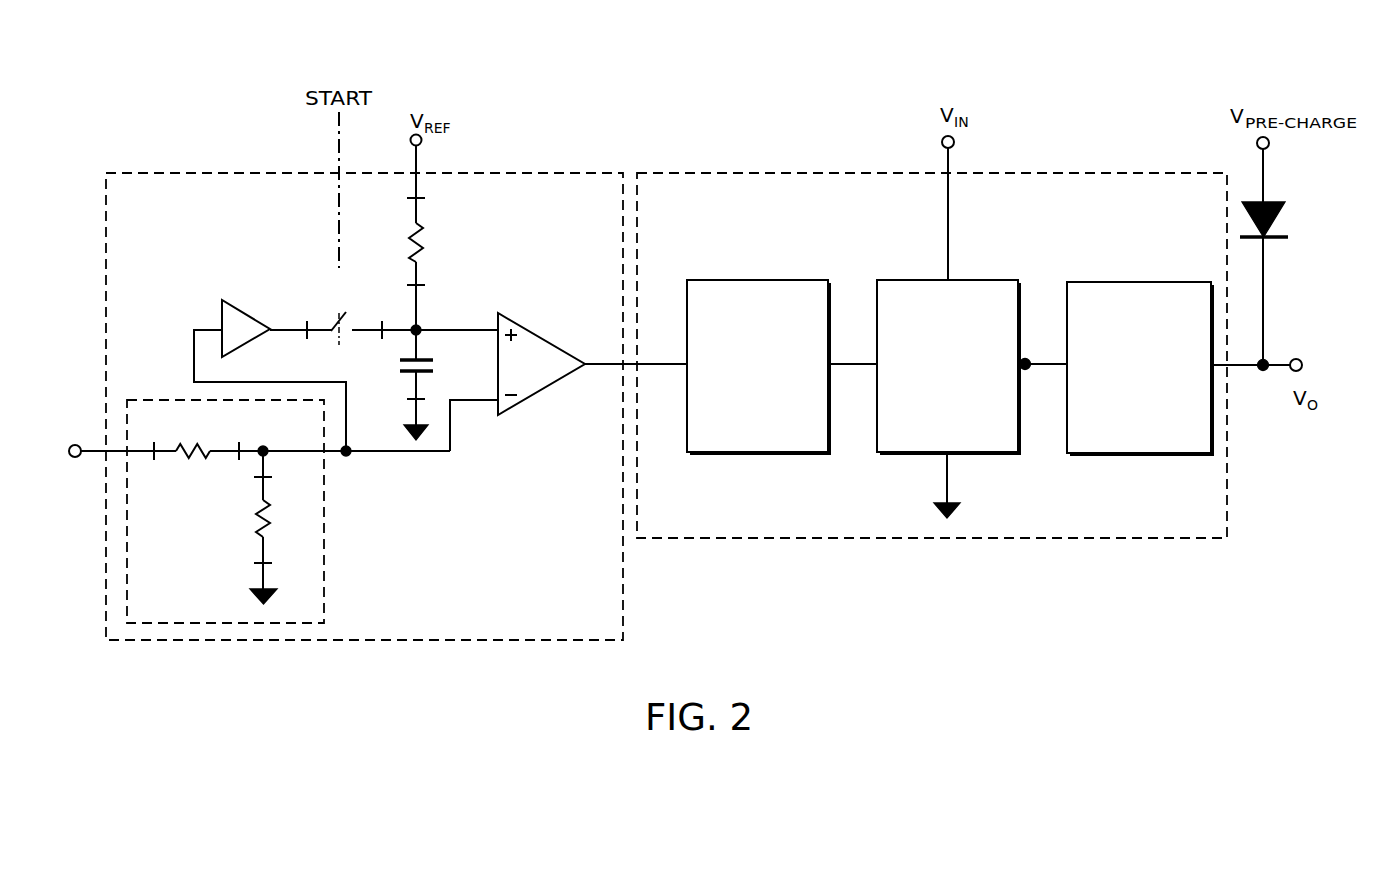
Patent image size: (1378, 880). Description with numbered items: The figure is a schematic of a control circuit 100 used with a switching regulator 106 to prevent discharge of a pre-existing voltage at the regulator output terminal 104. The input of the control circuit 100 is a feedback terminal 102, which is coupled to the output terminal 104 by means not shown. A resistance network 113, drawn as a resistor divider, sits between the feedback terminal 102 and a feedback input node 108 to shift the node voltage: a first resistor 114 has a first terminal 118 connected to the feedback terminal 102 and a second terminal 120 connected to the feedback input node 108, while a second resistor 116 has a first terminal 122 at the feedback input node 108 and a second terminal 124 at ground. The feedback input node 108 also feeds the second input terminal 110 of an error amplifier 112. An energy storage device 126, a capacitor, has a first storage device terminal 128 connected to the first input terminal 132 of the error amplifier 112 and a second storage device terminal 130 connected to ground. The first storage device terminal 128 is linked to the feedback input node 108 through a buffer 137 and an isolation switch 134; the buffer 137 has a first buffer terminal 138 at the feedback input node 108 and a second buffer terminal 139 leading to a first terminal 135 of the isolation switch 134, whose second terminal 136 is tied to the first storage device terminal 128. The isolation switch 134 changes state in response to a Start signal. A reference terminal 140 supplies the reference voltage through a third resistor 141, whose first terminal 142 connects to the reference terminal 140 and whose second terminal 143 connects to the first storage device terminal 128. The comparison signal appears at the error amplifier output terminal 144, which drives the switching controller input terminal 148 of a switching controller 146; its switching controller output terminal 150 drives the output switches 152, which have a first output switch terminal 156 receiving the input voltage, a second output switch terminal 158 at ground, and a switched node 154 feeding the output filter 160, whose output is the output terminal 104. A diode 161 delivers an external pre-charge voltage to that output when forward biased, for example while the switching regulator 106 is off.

The control circuit 100 is at (182, 216).
The feedback terminal 102 is at (116, 433).
The regulator output terminal 104 is at (1262, 349).
The switching regulator 106 is at (850, 216).
The feedback input node 108 is at (391, 469).
The second input terminal 110 is at (474, 409).
The error amplifier 112 is at (553, 374).
The resistance network 113 is at (217, 561).
The first resistor 114 is at (193, 468).
The second resistor 116 is at (285, 518).
The first terminal 118 is at (154, 435).
The second terminal 120 is at (278, 435).
The first terminal 122 is at (284, 475).
The second terminal 124 is at (282, 570).
The energy storage device 126 is at (395, 378).
The first storage device terminal 128 is at (436, 317).
The second storage device terminal 130 is at (393, 413).
The first input terminal 132 is at (457, 347).
The isolation switch 134 is at (335, 311).
The first terminal 135 is at (311, 350).
The second terminal 136 is at (384, 313).
The buffer 137 is at (241, 309).
The first buffer terminal 138 is at (264, 374).
The second buffer terminal 139 is at (287, 318).
The reference terminal 140 is at (441, 178).
The third resistor 141 is at (440, 242).
The first terminal 142 is at (439, 201).
The second terminal 143 is at (439, 296).
The error amplifier output terminal 144 is at (608, 382).
The switching controller 146 is at (775, 407).
The switching controller input terminal 148 is at (662, 382).
The switching controller output terminal 150 is at (852, 382).
The output switches 152 is at (965, 407).
The switched node 154 is at (1042, 380).
The first output switch terminal 156 is at (929, 208).
The second output switch terminal 158 is at (932, 485).
The output filter 160 is at (1157, 407).
The diode 161 is at (1276, 251).